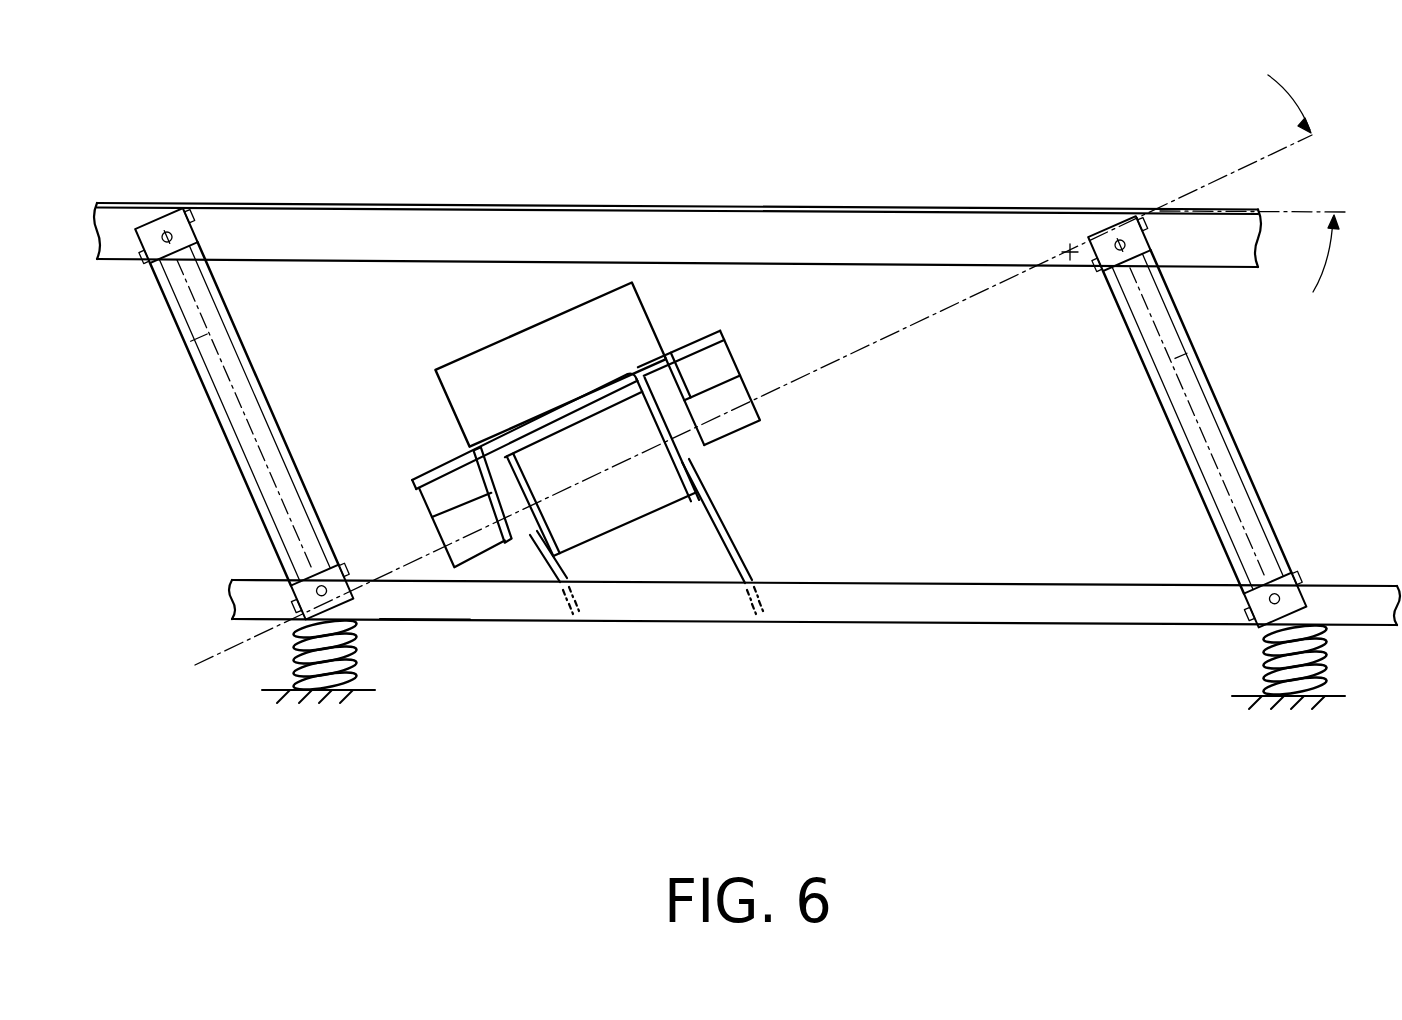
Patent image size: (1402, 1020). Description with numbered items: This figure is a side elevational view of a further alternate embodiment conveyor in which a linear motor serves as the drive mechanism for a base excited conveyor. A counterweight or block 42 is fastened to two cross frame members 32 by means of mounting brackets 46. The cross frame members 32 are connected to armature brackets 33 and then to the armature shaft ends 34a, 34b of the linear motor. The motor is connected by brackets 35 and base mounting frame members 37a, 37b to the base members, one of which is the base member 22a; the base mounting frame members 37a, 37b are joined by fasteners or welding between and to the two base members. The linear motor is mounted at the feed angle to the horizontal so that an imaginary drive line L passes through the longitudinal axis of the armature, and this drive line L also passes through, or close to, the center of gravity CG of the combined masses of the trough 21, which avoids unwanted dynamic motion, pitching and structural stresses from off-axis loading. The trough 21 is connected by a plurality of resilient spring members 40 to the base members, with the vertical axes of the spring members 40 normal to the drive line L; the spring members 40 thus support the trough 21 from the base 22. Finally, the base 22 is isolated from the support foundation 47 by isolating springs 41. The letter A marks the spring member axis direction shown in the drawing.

The trough 21 is at (257, 204).
The base 22 is at (916, 574).
The base member 22a is at (426, 624).
The cross frame member 32 is at (448, 541).
The armature bracket 33 is at (521, 545).
The armature shaft end 34a is at (672, 418).
The armature shaft end 34b is at (476, 447).
The bracket 35 is at (633, 381).
The base mounting frame member 37a is at (735, 547).
The base mounting frame member 37b is at (570, 578).
The resilient spring member 40 is at (220, 428).
The isolating spring 41 is at (1257, 660).
The counterweight block 42 is at (500, 346).
The mounting bracket 46 is at (437, 488).
The support foundation 47 is at (285, 705).
The link axis indication A is at (192, 348).
The center of gravity CG is at (1068, 243).
The drive line L is at (873, 328).